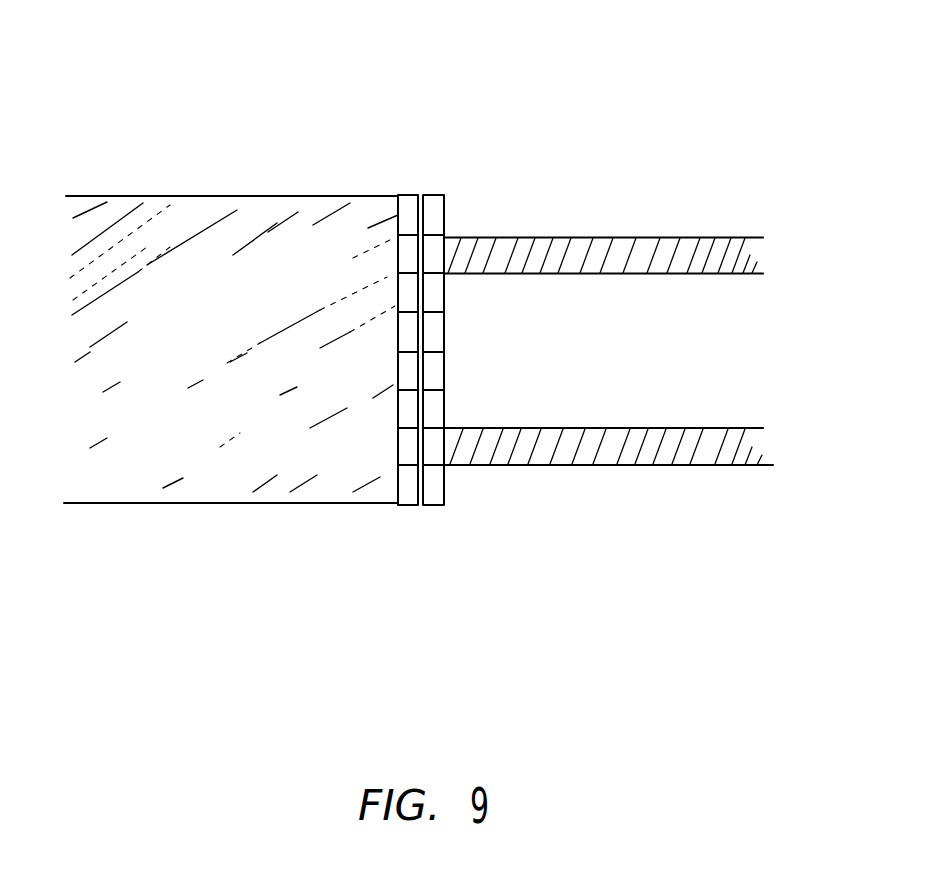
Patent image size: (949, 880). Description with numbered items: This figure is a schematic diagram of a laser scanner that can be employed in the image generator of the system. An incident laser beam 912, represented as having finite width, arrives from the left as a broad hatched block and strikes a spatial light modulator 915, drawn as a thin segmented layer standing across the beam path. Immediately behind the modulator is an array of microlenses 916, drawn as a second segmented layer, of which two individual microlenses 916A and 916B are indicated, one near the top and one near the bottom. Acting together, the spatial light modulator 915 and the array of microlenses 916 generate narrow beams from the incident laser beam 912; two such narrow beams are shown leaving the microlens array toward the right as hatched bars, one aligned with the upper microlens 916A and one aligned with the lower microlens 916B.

The incident laser beam 912 is at (192, 178).
The spatial light modulator 915 is at (401, 178).
The array of microlenses 916 is at (439, 174).
The microlens 916A is at (453, 222).
The microlens 916B is at (461, 466).